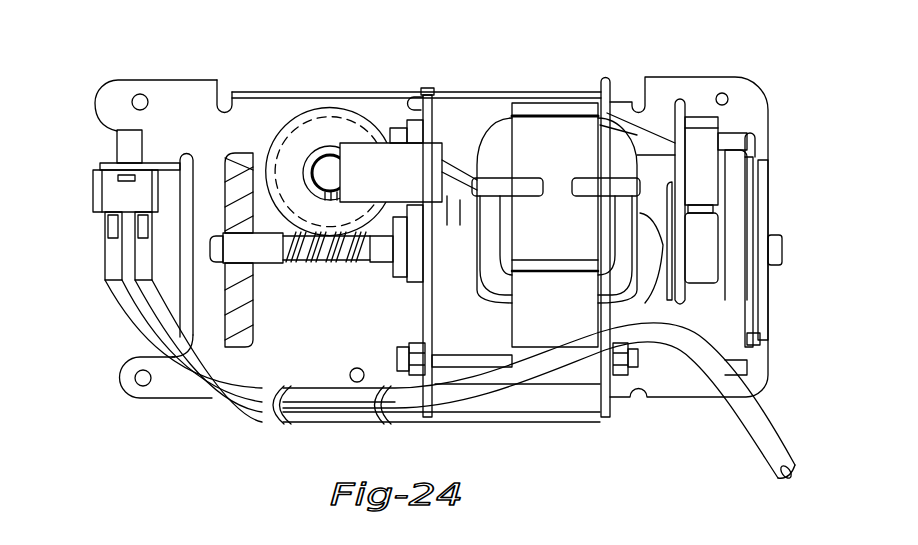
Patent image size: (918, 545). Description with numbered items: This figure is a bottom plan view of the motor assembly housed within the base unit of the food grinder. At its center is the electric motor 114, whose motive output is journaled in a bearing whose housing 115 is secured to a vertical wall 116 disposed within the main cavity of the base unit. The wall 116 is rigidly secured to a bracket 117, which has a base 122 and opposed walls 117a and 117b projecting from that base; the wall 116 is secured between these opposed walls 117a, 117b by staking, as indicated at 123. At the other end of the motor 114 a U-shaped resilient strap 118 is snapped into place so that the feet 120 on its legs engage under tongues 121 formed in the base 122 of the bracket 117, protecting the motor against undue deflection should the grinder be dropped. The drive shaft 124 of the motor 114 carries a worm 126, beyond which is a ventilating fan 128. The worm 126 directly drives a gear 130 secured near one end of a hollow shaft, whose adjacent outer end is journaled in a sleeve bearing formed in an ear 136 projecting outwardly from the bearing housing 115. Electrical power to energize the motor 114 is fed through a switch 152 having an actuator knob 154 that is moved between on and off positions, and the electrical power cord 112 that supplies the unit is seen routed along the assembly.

The electrical power cord 112 is at (765, 422).
The electric motor 114 is at (540, 145).
The bearing housing 115 is at (418, 290).
The vertical wall 116 is at (413, 100).
The bracket 117 is at (203, 95).
The opposed wall 117a is at (486, 93).
The opposed wall 117b is at (590, 408).
The U-shaped resilient strap 118 is at (765, 195).
The feet 120 is at (757, 150).
The tongues 121 is at (730, 140).
The base 122 is at (724, 97).
The staking 123 is at (433, 88).
The drive shaft 124 is at (268, 256).
The worm 126 is at (347, 264).
The ventilating fan 128 is at (240, 158).
The gear 130 is at (320, 130).
The ear 136 is at (435, 160).
The switch 152 is at (112, 185).
The actuator knob 154 is at (140, 150).